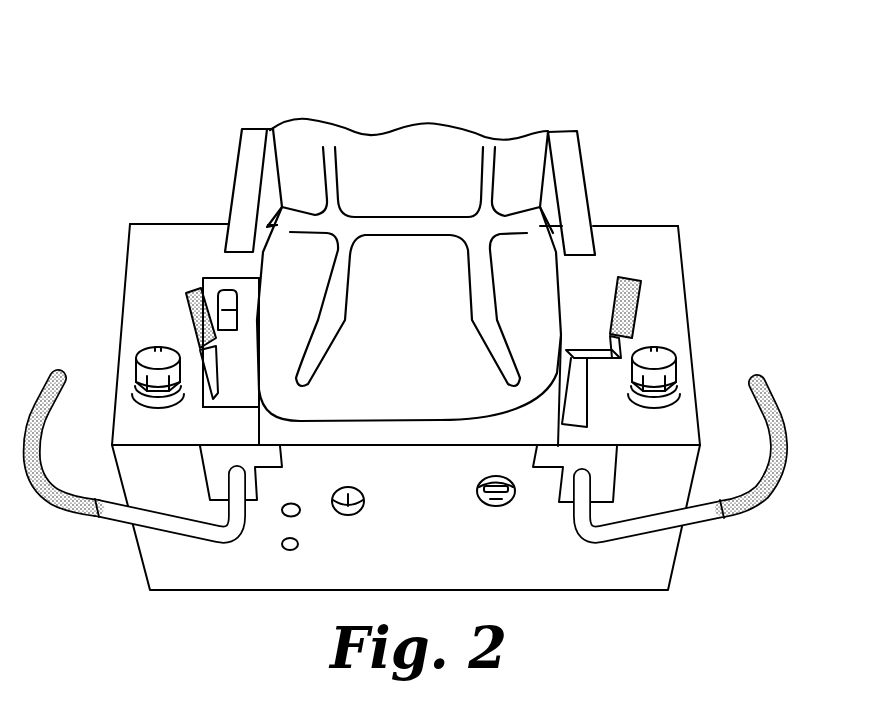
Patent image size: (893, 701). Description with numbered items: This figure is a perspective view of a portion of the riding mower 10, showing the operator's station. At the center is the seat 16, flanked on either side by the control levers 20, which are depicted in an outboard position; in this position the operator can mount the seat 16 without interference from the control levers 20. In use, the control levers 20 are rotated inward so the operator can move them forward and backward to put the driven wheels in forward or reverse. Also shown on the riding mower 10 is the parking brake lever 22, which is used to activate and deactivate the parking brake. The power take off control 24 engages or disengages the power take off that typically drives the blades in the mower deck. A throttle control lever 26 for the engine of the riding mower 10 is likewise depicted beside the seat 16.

The riding mower 10 is at (641, 73).
The seat 16 is at (432, 397).
The control levers 20 is at (57, 493).
The parking brake lever 22 is at (652, 229).
The power take off control 24 is at (224, 293).
The throttle control lever 26 is at (184, 299).